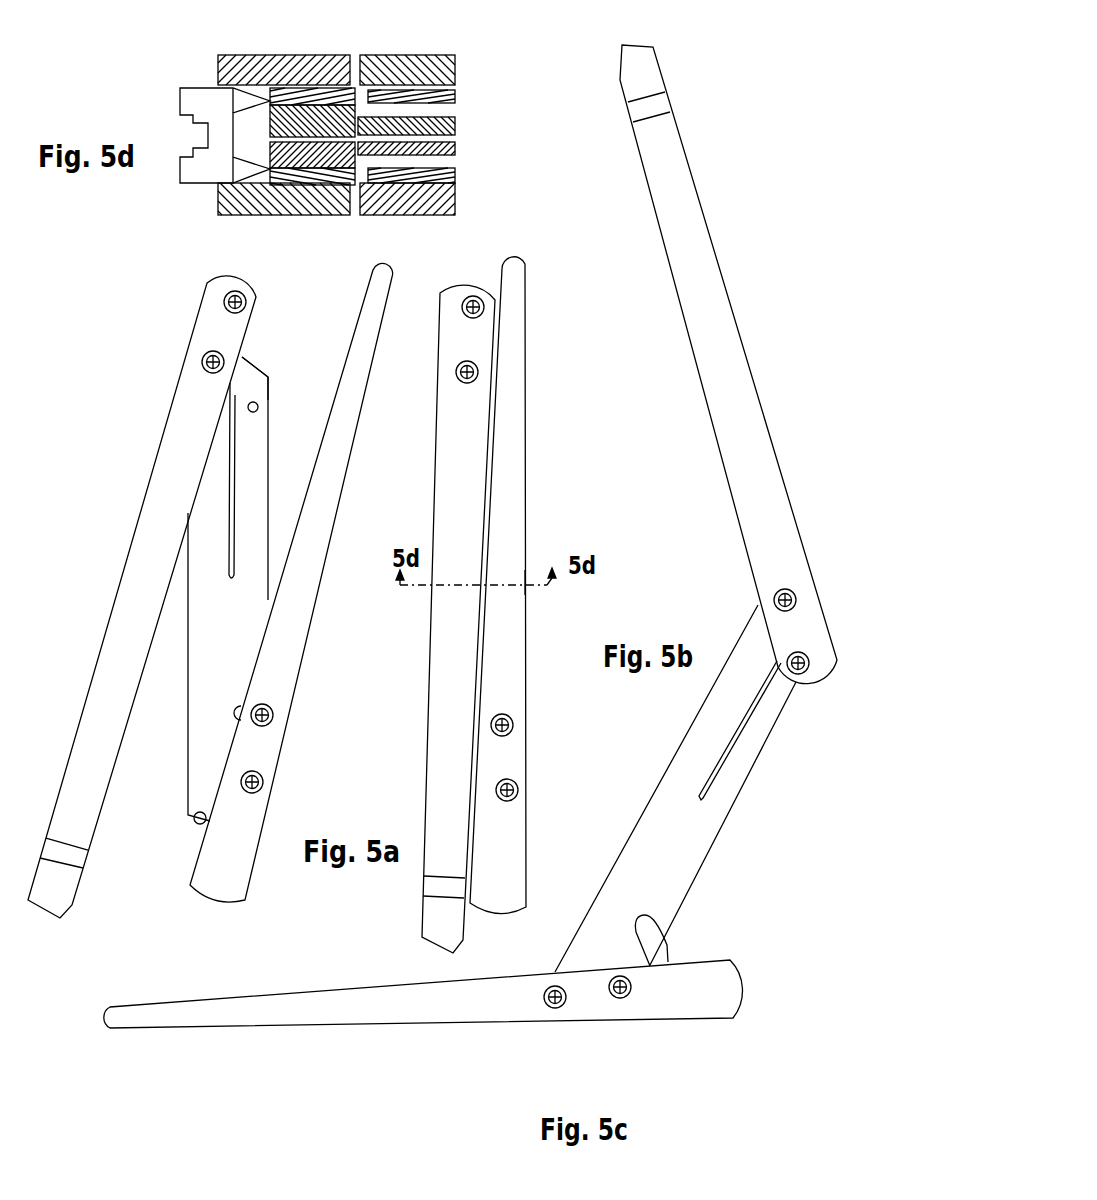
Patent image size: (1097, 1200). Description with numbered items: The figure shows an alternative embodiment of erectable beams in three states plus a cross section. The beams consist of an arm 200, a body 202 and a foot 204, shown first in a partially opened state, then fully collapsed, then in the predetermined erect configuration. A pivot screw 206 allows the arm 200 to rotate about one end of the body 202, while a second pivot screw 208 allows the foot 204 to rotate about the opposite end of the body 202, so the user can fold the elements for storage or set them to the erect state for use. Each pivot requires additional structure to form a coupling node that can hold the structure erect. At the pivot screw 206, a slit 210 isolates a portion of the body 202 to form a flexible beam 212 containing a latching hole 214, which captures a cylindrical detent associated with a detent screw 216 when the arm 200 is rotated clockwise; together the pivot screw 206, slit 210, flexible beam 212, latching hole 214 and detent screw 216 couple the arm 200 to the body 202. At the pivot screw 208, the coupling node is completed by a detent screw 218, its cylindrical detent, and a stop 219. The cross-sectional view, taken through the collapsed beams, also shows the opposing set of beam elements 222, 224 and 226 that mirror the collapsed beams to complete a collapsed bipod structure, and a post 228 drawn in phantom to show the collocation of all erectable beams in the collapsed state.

In FIG. 5D, the arm 200 is at (258, 53).
In FIG. 5A, the arm 200 is at (147, 527).
In FIG. 5B, the arm 200 is at (452, 488).
In FIG. 5C, the arm 200 is at (700, 315).
In FIG. 5D, the body 202 is at (455, 127).
In FIG. 5A, the body 202 is at (207, 672).
In FIG. 5C, the body 202 is at (710, 828).
In FIG. 5D, the foot 204 is at (377, 63).
In FIG. 5A, the foot 204 is at (302, 598).
In FIG. 5B, the foot 204 is at (513, 488).
In FIG. 5C, the foot 204 is at (688, 975).
In FIG. 5A, the pivot screw 206 is at (205, 353).
In FIG. 5B, the pivot screw 206 is at (455, 373).
In FIG. 5C, the pivot screw 206 is at (795, 597).
In FIG. 5A, the pivot screw 208 is at (263, 776).
In FIG. 5C, the pivot screw 208 is at (622, 997).
In FIG. 5A, the slit 210 is at (233, 510).
In FIG. 5B, the slit 210 is at (532, 580).
In FIG. 5C, the slit 210 is at (740, 730).
In FIG. 5A, the flexible beam 212 is at (257, 437).
In FIG. 5A, the latching hole 214 is at (258, 397).
In FIG. 5A, the detent screw 216 is at (228, 294).
In FIG. 5B, the detent screw 216 is at (475, 297).
In FIG. 5C, the detent screw 216 is at (808, 673).
In FIG. 5A, the detent screw 218 is at (273, 712).
In FIG. 5C, the detent screw 218 is at (542, 1000).
In FIG. 5A, the stop 219 is at (197, 825).
In FIG. 5D, the beam element 222 is at (323, 210).
In FIG. 5D, the beam element 224 is at (408, 213).
In FIG. 5D, the beam element 226 is at (455, 176).
In FIG. 5D, the post 228 is at (212, 103).